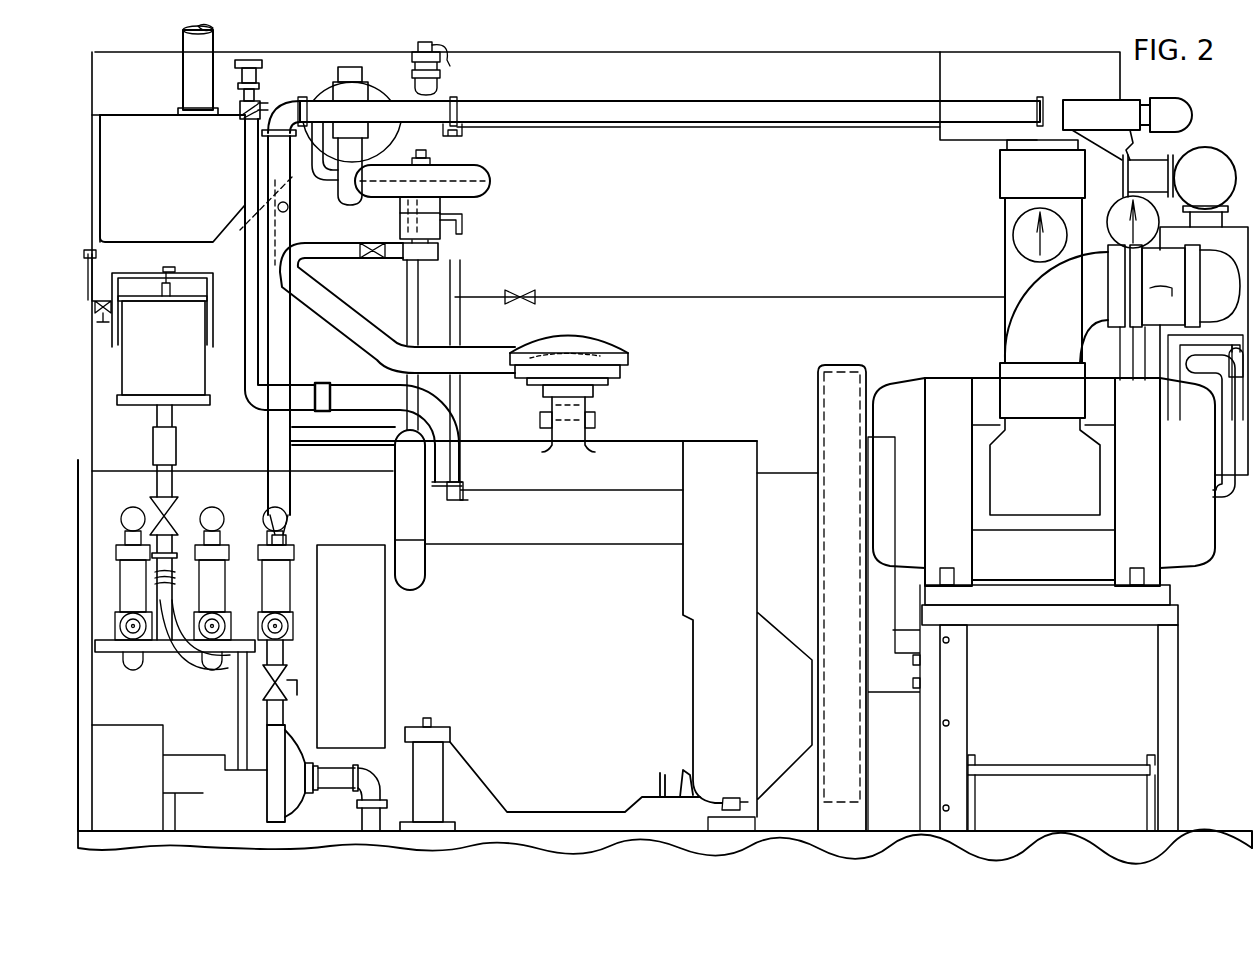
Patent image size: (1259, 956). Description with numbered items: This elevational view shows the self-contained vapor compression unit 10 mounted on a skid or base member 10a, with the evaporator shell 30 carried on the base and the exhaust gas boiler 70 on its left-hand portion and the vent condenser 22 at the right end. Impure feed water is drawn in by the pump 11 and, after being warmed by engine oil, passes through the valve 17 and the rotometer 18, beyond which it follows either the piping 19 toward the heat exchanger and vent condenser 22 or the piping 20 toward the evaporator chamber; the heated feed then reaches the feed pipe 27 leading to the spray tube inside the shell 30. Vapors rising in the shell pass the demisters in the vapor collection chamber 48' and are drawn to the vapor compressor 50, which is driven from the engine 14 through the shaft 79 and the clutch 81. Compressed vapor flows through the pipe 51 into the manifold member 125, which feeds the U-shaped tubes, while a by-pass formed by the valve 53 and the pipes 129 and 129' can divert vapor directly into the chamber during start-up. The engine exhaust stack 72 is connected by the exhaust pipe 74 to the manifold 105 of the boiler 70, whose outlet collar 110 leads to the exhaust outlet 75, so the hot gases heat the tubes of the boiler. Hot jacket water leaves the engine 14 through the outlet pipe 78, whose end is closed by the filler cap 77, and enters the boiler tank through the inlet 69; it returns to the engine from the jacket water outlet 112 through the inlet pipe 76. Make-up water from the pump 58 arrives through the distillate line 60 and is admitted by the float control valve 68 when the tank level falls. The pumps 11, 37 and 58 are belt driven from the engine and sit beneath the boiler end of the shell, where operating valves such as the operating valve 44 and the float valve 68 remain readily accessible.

The vapor compression unit 10 is at (648, 245).
The skid or base member 10a is at (1213, 840).
The pump 11 is at (292, 752).
The engine 14 is at (524, 623).
The valve 17 is at (288, 699).
The rotometer 18 is at (290, 590).
The piping 19 is at (1212, 372).
The piping 20 is at (332, 255).
The vent condenser 22 is at (1217, 388).
The feed pipe 27 is at (690, 88).
The evaporator shell 30 is at (846, 46).
The pump 37 is at (140, 665).
The operating valve 44 is at (478, 175).
The vapor collection chamber 48' is at (990, 84).
The vapor compressor 50 is at (902, 392).
The pipe 51 is at (1125, 298).
The valve 53 is at (1218, 160).
The pump 58 is at (212, 670).
The distillate line 60 is at (410, 266).
The float control valve 68 is at (350, 203).
The inlet 69 is at (238, 115).
The exhaust gas boiler 70 is at (132, 176).
The exhaust stack 72 is at (578, 437).
The exhaust pipe 74 is at (355, 323).
The exhaust outlet 75 is at (213, 65).
The inlet pipe 76 is at (342, 438).
The filler cap 77 is at (262, 68).
The outlet pipe 78 is at (258, 396).
The shaft 79 is at (815, 710).
The clutch 81 is at (850, 766).
The manifold 105 is at (100, 130).
The outlet collar 110 is at (183, 108).
The jacket water outlet 112 is at (290, 208).
The manifold member 125 is at (1232, 252).
The pipe 129 is at (1207, 200).
The pipe 129' is at (1152, 145).